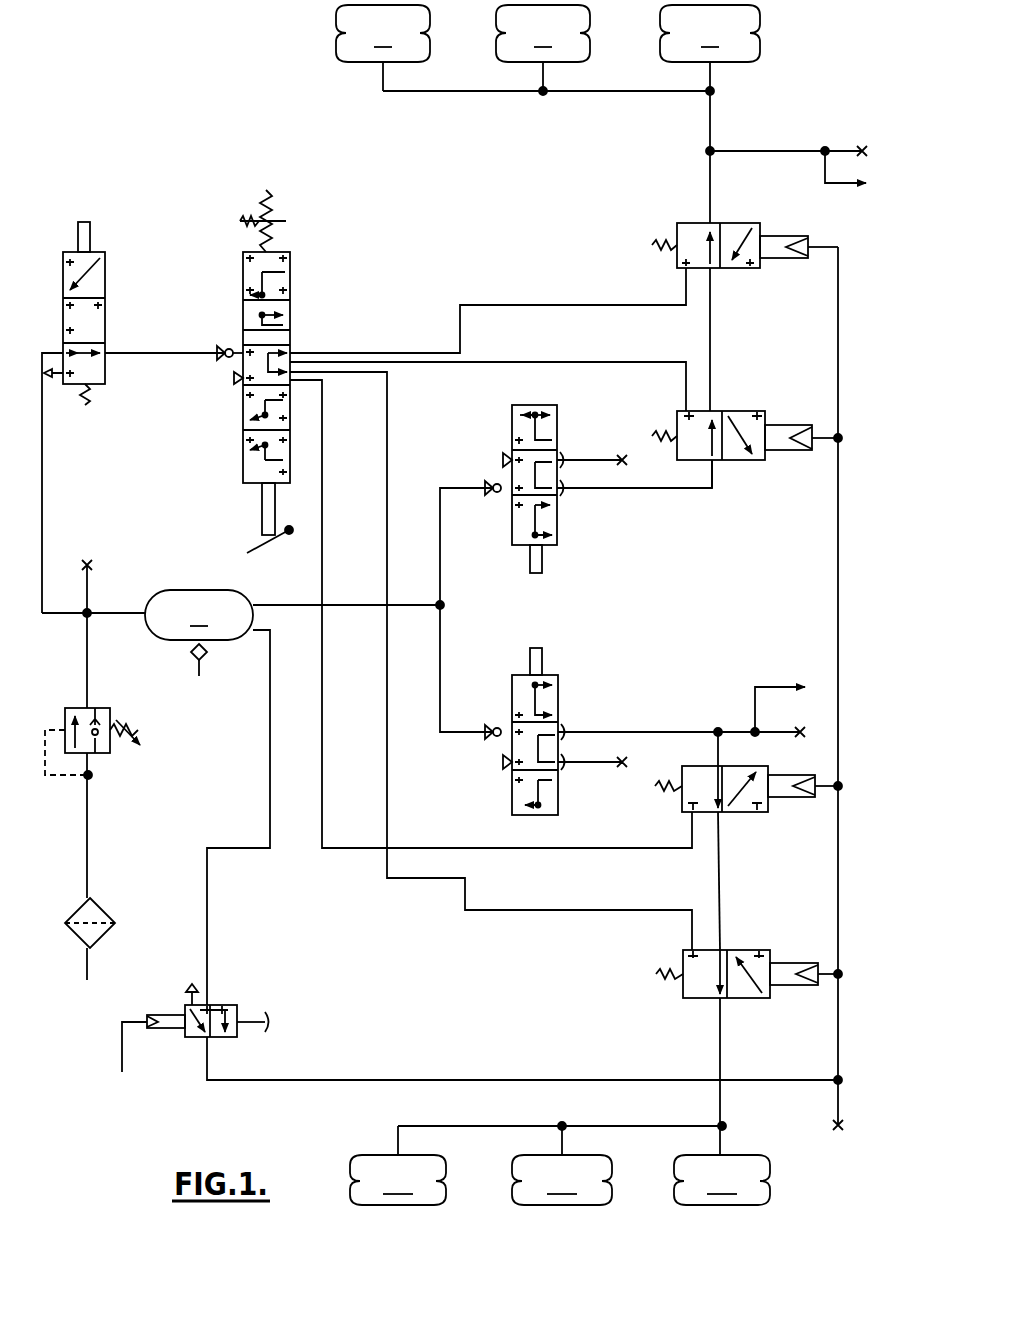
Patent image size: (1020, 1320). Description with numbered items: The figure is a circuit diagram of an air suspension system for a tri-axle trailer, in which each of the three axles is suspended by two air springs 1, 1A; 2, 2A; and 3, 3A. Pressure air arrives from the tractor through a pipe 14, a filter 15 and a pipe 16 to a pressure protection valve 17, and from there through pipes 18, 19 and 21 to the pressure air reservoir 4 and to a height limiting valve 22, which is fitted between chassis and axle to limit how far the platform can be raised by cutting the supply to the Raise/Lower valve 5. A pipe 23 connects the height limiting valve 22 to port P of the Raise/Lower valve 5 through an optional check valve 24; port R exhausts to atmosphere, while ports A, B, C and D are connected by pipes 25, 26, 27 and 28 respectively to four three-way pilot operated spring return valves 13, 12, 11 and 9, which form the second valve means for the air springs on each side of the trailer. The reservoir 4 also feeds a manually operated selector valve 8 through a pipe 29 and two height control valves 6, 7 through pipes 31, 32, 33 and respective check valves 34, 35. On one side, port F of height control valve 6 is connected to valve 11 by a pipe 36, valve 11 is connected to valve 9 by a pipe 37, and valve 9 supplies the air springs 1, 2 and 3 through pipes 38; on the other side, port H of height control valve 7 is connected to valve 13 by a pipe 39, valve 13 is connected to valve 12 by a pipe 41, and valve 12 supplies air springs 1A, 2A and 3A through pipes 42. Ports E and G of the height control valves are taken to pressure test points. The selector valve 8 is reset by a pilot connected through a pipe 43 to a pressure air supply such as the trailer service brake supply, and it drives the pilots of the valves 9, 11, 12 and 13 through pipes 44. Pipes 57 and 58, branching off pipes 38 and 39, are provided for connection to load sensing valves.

The air spring 1 is at (383, 48).
The air spring 2 is at (543, 50).
The air spring 3 is at (710, 114).
The air spring 1A is at (398, 1165).
The air spring 2A is at (562, 1165).
The air spring 3A is at (722, 1180).
The pressure air reservoir 4 is at (199, 633).
The Raise/Lower valve 5 is at (278, 204).
The height control valve 6 is at (562, 405).
The height control valve 7 is at (550, 665).
The manually operated selector valve 8 is at (246, 1005).
The 3-way pilot operated spring return valve 9 is at (768, 220).
The 3-way pilot operated spring return valve 11 is at (768, 410).
The 3-way pilot operated spring return valve 12 is at (774, 1000).
The 3-way pilot operated spring return valve 13 is at (772, 814).
The pipe 14 is at (90, 972).
The filter 15 is at (103, 937).
The pipe 16 is at (90, 826).
The pressure protection valve 17 is at (108, 755).
The pipe 18 is at (89, 650).
The pipe 19 is at (115, 612).
The pipe 21 is at (44, 475).
The height limiting valve 22 is at (104, 244).
The pipe 23 is at (150, 352).
The check valve 24 is at (224, 360).
The pipe 25 is at (324, 492).
The pipe 26 is at (389, 492).
The pipe 27 is at (550, 362).
The pipe 28 is at (555, 305).
The pipe 29 is at (268, 690).
The pipe 31 is at (270, 600).
The pipe 32 is at (442, 540).
The pipe 33 is at (442, 672).
The check valve 34 is at (505, 457).
The check valve 35 is at (492, 740).
The pipe 36 is at (650, 490).
The pipe 37 is at (712, 340).
The pipes 38 is at (618, 92).
The pipe 39 is at (633, 725).
The pipe 41 is at (722, 890).
The pipes 42 is at (625, 1124).
The pipe 43 is at (124, 1050).
The pipes 44 is at (492, 1079).
The pipe 57 is at (823, 166).
The pipe 58 is at (760, 688).
The port A is at (290, 380).
The port B is at (292, 372).
The port C is at (292, 355).
The port D is at (290, 353).
The port E is at (562, 458).
The port F is at (562, 492).
The port G is at (562, 766).
The port H is at (562, 730).
The port P is at (233, 380).
The port R is at (242, 392).